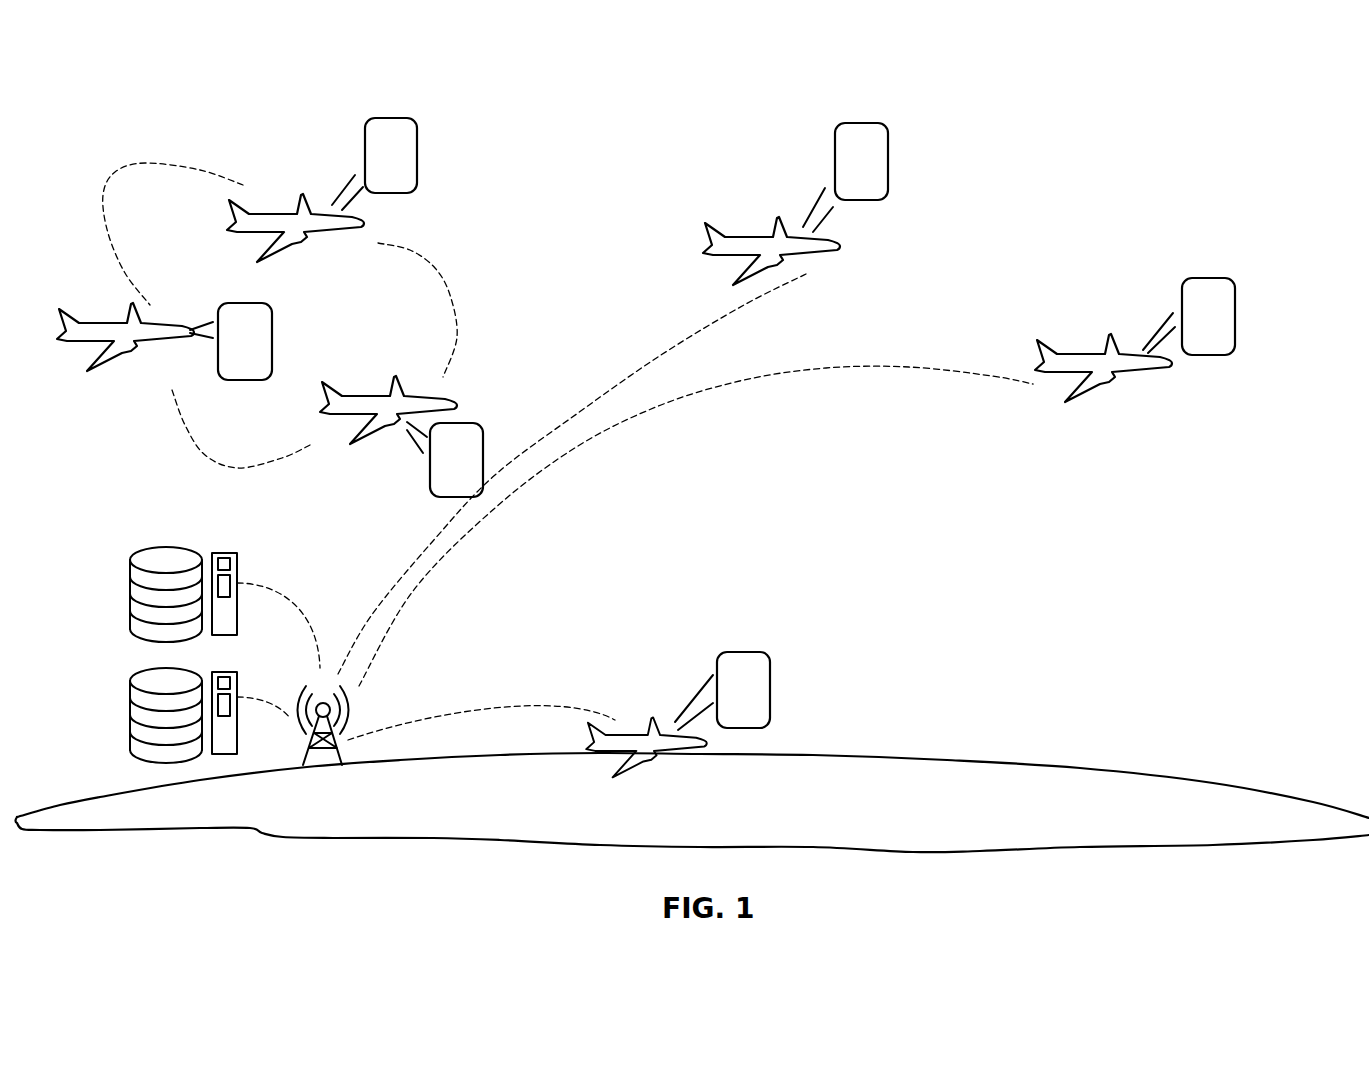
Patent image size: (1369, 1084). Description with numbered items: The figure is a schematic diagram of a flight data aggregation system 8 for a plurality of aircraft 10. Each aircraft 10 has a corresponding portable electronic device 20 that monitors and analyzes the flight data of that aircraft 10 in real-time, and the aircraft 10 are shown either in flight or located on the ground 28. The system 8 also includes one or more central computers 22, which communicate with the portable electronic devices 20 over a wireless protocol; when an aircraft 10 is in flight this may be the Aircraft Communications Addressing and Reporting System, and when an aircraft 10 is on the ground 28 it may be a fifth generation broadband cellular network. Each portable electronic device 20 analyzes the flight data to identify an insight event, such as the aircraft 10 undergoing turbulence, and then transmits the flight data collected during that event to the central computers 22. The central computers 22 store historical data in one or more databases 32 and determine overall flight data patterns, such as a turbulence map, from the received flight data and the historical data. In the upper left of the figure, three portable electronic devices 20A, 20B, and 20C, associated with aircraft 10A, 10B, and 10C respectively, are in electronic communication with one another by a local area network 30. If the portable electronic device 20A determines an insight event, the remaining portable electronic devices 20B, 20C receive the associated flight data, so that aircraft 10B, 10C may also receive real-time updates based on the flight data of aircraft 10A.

The flight data aggregation system 8 is at (1218, 169).
The aircraft 10 is at (747, 237).
The aircraft 10A is at (80, 343).
The aircraft 10B is at (363, 398).
The aircraft 10C is at (267, 217).
The portable electronic device 20 is at (863, 123).
The portable electronic device 20A is at (252, 303).
The portable electronic device 20B is at (467, 423).
The portable electronic device 20C is at (390, 118).
The central computer 22 is at (223, 552).
The ground 28 is at (1010, 763).
The local area network 30 is at (435, 267).
The database 32 is at (147, 548).